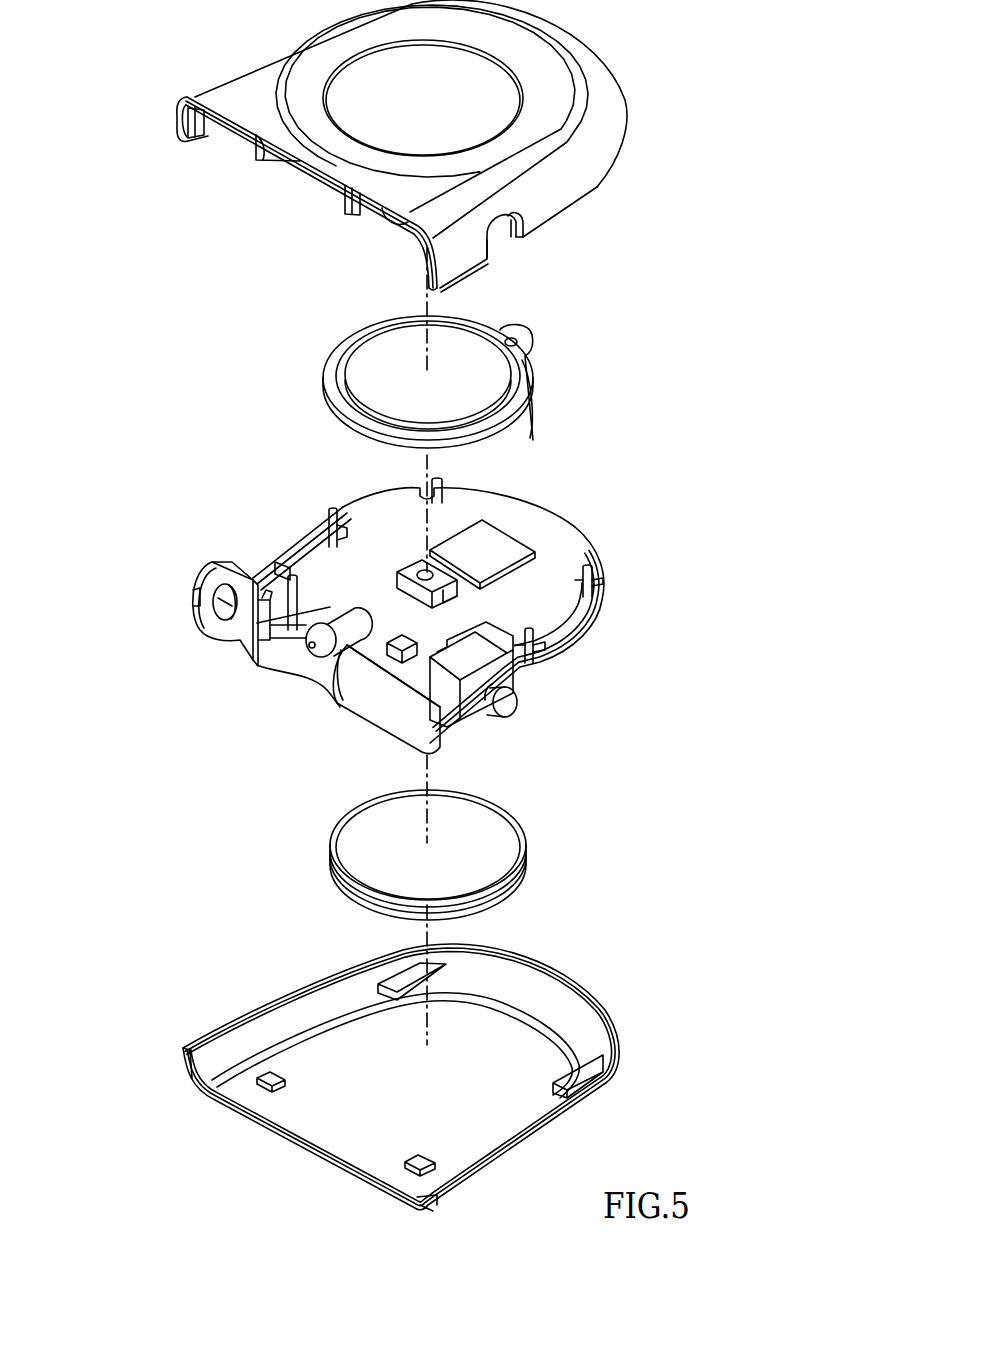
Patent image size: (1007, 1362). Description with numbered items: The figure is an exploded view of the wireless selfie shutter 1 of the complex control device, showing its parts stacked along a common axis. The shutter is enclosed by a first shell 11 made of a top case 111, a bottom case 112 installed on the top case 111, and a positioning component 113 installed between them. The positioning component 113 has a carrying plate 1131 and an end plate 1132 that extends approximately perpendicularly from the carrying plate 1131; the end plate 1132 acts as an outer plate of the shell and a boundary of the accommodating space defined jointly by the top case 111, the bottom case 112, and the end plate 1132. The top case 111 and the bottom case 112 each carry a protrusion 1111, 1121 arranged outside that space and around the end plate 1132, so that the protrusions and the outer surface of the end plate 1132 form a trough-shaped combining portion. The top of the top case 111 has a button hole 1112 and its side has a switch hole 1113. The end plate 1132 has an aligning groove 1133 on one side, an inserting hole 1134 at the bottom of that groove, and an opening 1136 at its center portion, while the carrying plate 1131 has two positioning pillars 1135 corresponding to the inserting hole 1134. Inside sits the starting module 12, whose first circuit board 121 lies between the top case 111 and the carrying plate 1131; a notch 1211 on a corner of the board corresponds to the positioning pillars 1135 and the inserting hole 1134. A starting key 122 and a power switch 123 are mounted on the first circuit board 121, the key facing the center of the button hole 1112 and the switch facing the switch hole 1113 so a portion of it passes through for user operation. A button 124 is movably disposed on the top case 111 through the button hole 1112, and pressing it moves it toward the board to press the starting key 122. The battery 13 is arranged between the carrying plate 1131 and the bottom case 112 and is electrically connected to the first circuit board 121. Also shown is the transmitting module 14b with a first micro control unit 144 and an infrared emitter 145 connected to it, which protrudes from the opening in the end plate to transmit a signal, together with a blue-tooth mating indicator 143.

The wireless selfie shutter 1 is at (159, 27).
The first shell 11 is at (420, 605).
The top case 111 is at (403, 146).
The protrusion 1111 is at (188, 130).
The button hole 1112 is at (477, 87).
The switch hole 1113 is at (498, 240).
The bottom case 112 is at (402, 1077).
The protrusion 1121 is at (185, 1060).
The positioning component 113 is at (397, 592).
The carrying plate 1131 is at (253, 587).
The end plate 1132 is at (207, 570).
The aligning groove 1133 is at (200, 600).
The inserting hole 1134 is at (223, 617).
The positioning pillars 1135 is at (262, 618).
The opening 1136 is at (340, 650).
The starting module 12 is at (510, 511).
The first circuit board 121 is at (555, 602).
The notch 1211 is at (257, 577).
The starting key 122 is at (567, 630).
The power switch 123 is at (512, 716).
The button 124 is at (487, 373).
The battery 13 is at (483, 822).
The transmitting module 14b is at (387, 544).
The blue-tooth mating indicator 143 is at (393, 628).
The first micro control unit 144 is at (460, 543).
The infrared emitter 145 is at (297, 563).